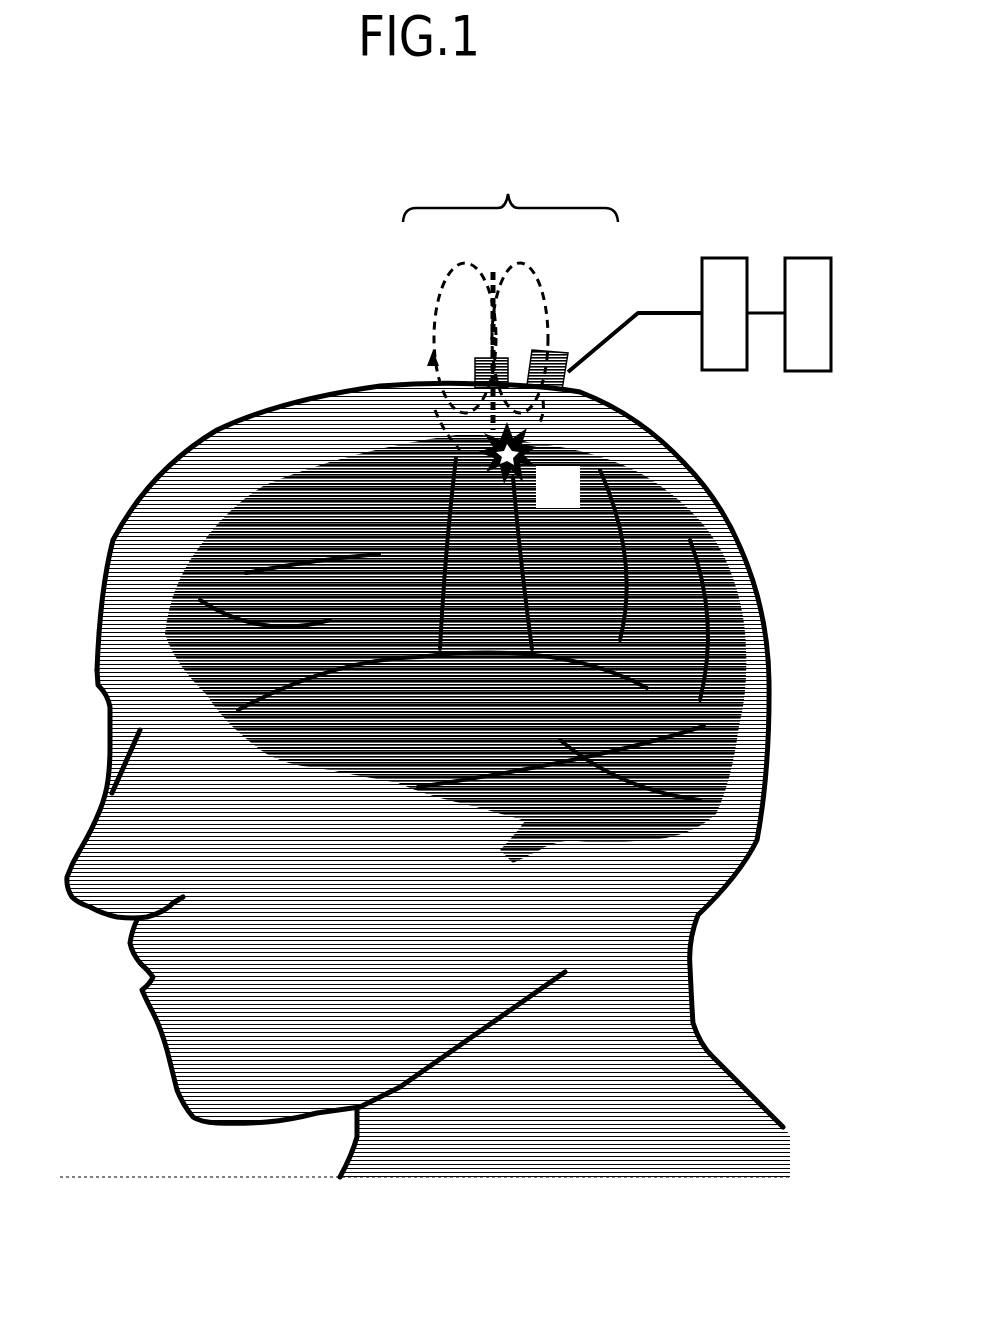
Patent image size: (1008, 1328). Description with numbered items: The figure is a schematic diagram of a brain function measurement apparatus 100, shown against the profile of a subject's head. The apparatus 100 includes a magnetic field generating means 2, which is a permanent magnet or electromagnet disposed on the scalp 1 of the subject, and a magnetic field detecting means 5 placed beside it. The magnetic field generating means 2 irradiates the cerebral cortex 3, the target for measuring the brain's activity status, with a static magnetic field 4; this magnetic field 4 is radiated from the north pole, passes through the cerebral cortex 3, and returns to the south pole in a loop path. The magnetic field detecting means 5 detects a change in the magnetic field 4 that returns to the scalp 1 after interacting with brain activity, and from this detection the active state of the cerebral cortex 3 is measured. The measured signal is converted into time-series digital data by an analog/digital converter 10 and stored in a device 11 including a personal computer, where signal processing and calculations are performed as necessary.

The scalp 1 is at (217, 430).
The magnetic field generating means 2 is at (480, 357).
The cerebral cortex 3 is at (568, 501).
The magnetic field 4 is at (437, 338).
The magnetic field detecting means 5 is at (562, 350).
The analog/digital converter 10 is at (737, 257).
The device 11 is at (817, 258).
The brain function measurement apparatus 100 is at (510, 192).